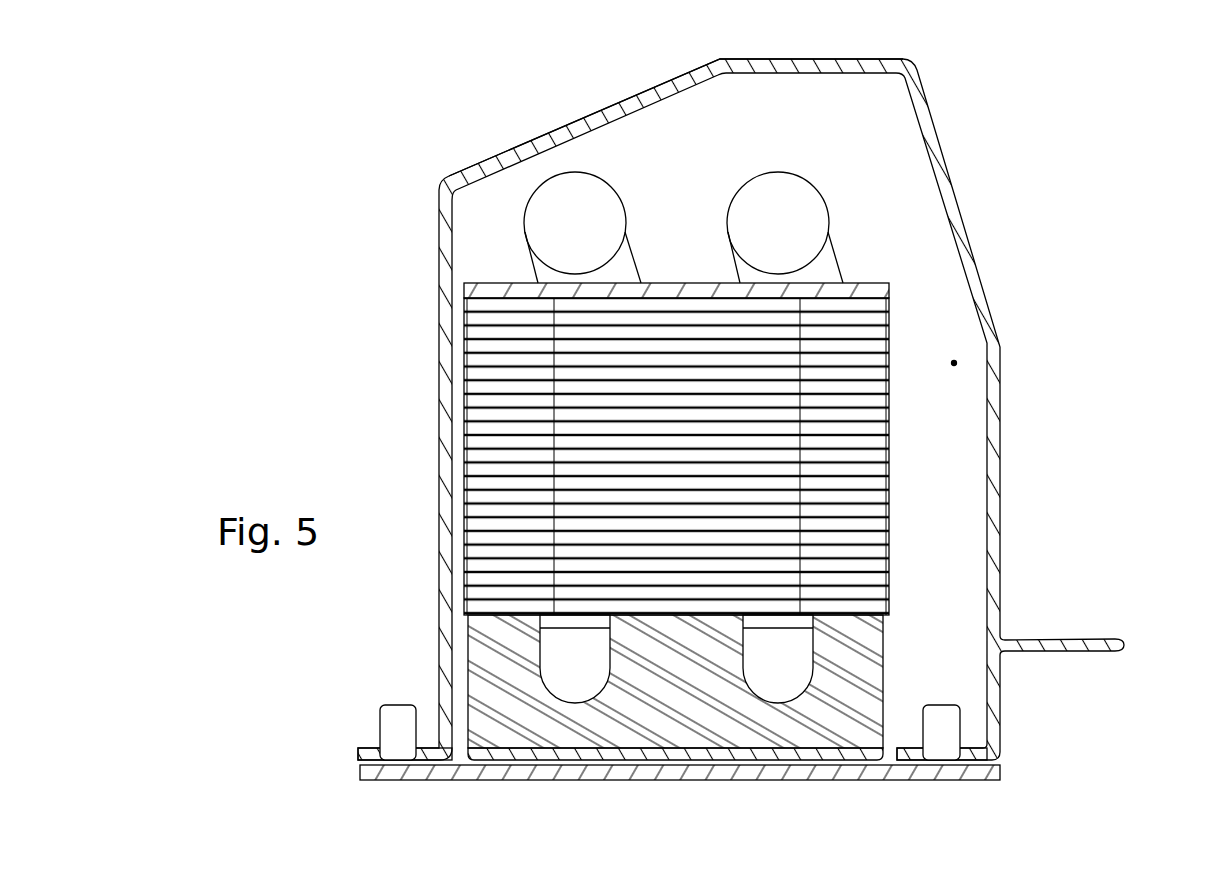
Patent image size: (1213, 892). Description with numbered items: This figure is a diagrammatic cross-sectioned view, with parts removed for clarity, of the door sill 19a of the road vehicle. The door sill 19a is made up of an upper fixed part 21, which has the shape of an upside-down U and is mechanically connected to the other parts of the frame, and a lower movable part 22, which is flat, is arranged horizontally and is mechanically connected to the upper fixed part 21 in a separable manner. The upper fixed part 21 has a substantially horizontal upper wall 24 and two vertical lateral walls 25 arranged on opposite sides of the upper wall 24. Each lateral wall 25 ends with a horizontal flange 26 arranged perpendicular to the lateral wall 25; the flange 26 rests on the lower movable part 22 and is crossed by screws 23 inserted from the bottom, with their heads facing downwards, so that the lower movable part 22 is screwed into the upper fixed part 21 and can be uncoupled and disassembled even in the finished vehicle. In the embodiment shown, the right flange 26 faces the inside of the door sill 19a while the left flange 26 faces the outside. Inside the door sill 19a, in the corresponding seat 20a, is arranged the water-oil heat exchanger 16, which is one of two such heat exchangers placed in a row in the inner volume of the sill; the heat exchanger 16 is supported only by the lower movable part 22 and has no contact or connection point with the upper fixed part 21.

The upper fixed part 21 is at (738, 420).
The upper wall 24 is at (549, 136).
The lateral wall 25 is at (731, 409).
The water-oil heat exchanger 16 is at (468, 420).
The seat 20a is at (957, 363).
The screw 23 is at (397, 725).
The horizontal flange 26 is at (368, 752).
The lower movable part 22 is at (372, 773).
The door sill 19a is at (1098, 739).